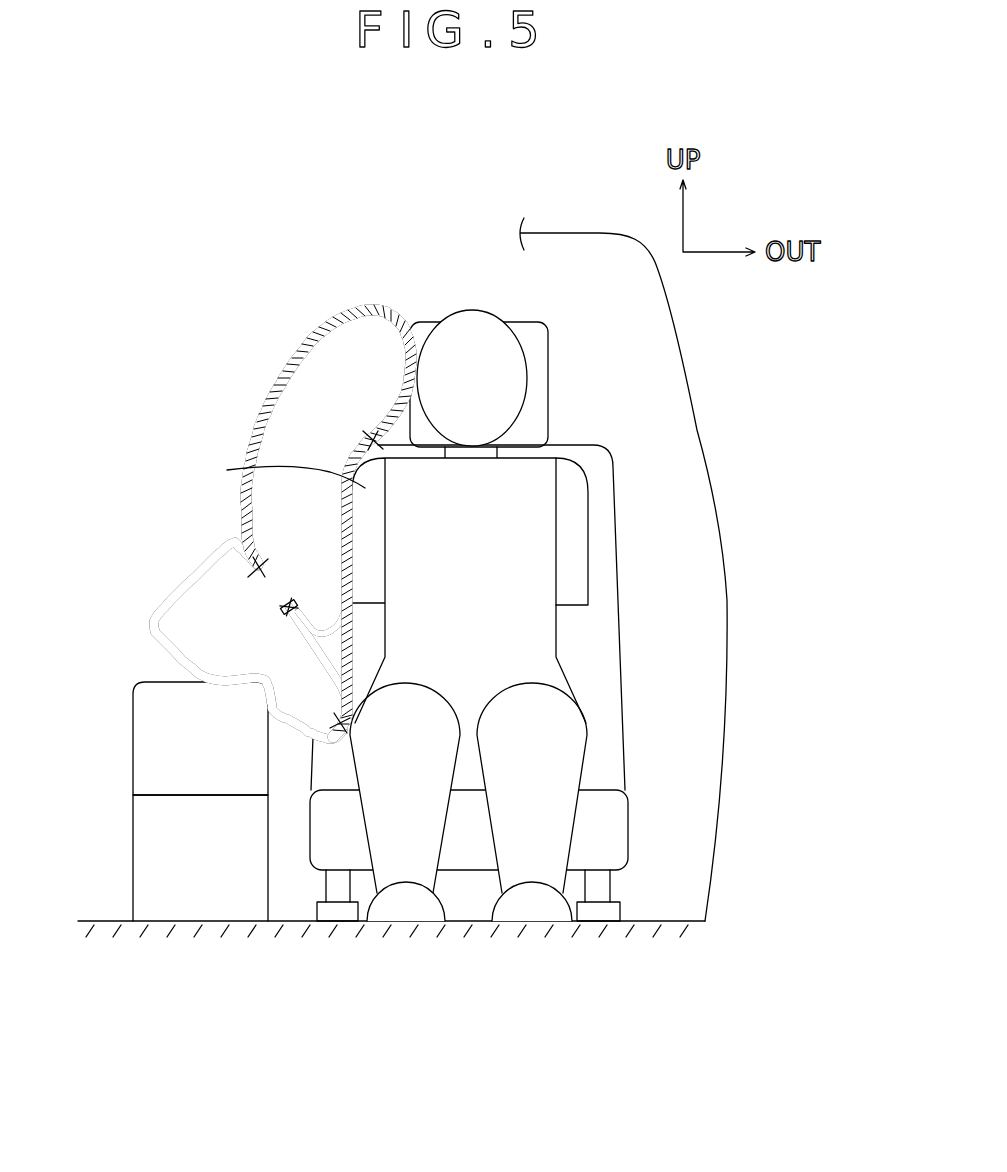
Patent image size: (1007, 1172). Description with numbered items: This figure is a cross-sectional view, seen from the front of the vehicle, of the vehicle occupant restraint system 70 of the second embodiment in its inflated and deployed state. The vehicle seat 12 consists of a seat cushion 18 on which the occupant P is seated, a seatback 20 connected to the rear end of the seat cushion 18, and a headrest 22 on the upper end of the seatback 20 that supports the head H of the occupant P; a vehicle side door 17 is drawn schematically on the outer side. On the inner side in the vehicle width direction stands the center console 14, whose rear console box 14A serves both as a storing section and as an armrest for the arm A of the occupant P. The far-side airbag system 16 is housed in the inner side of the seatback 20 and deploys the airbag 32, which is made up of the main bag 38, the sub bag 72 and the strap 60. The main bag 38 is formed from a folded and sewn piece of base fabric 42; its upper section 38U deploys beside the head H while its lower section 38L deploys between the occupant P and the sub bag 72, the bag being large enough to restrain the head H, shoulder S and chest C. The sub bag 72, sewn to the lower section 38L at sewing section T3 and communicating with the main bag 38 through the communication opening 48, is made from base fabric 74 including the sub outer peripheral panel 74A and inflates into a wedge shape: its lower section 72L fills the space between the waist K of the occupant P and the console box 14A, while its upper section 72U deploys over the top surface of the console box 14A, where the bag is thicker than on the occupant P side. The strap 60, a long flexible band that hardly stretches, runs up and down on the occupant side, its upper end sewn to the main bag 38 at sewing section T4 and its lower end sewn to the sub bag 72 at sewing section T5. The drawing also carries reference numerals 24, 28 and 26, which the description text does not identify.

The vehicle occupant restraint system 70 is at (264, 519).
The far-side airbag system 16 is at (264, 479).
The main bag 38 is at (298, 521).
The base fabric 42 is at (298, 521).
The upper section of the main bag 38U is at (295, 352).
The lower section of the main bag 38L is at (357, 587).
The far-side airbag 32 is at (229, 515).
The strap 60 is at (366, 643).
The sub bag 72 is at (201, 645).
The base fabric 74 is at (201, 645).
The upper section of the sub bag 72U is at (150, 617).
The lower section of the sub bag 72L is at (283, 728).
The sub outer peripheral panel 74A is at (158, 660).
The communication opening 48 is at (280, 598).
The center console 14 is at (164, 801).
The console box 14A is at (133, 718).
The vehicle seat 12 is at (501, 662).
The seatback 20 is at (626, 680).
The headrest 22 is at (549, 394).
The seat cushion 18 is at (629, 832).
The seat leg 24 is at (491, 936).
The seat mounting portion 28 is at (337, 916).
The vehicle floor 26 is at (190, 919).
The vehicle side door 17 is at (728, 587).
The occupant P is at (510, 615).
The head H is at (527, 355).
The chest C is at (518, 567).
The arm A is at (589, 585).
The waist K is at (596, 724).
The shoulder S is at (227, 470).
The sewing section T3 is at (262, 560).
The sewing section T4 is at (368, 432).
The sewing section T5 is at (352, 724).